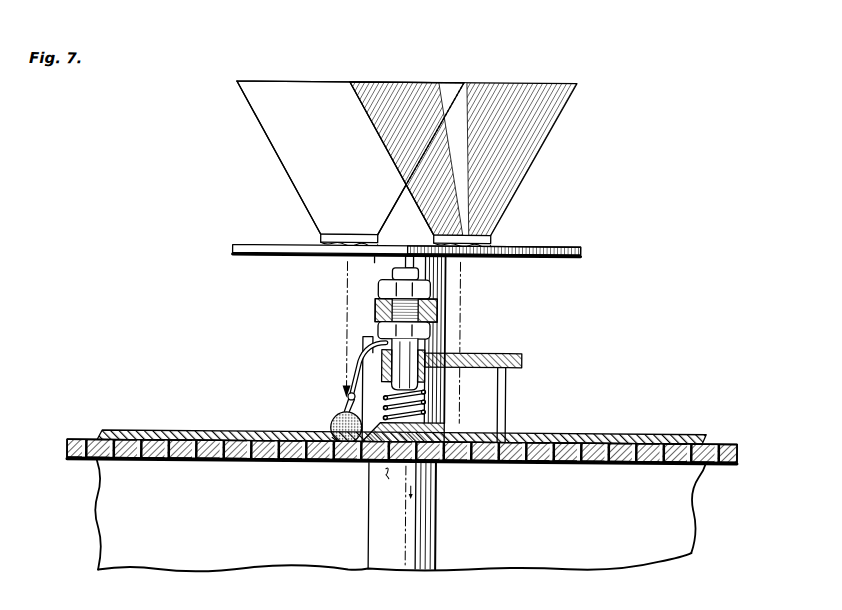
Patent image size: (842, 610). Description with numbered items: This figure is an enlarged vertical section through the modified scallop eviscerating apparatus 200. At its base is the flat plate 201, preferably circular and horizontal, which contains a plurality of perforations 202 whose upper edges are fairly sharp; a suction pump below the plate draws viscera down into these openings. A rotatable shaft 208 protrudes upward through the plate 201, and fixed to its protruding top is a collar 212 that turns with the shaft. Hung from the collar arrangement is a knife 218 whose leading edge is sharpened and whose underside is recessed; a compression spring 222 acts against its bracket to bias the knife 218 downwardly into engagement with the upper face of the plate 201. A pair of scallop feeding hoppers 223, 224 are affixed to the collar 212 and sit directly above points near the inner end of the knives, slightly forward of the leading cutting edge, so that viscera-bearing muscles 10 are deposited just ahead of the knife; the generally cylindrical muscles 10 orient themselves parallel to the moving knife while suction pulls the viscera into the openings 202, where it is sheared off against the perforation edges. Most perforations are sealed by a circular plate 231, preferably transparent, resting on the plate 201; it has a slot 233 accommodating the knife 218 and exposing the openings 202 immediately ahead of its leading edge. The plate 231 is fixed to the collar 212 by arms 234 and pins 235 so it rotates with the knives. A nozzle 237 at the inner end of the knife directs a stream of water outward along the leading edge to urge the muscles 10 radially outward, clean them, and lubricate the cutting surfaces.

The muscles 10 is at (340, 412).
The apparatus 200 is at (586, 222).
The flat plate 201 is at (417, 454).
The perforations 202 is at (193, 461).
The rotatable shaft 208 is at (417, 528).
The collar 212 is at (445, 312).
The knife 218 is at (437, 477).
The compression spring 222 is at (445, 408).
The scallop feeding hopper 223 is at (300, 166).
The scallop feeding hopper 224 is at (528, 167).
The circular plate 231 is at (594, 432).
The slot 233 is at (328, 430).
The arm 234 is at (477, 354).
The pin 235 is at (506, 390).
The nozzle 237 is at (363, 358).